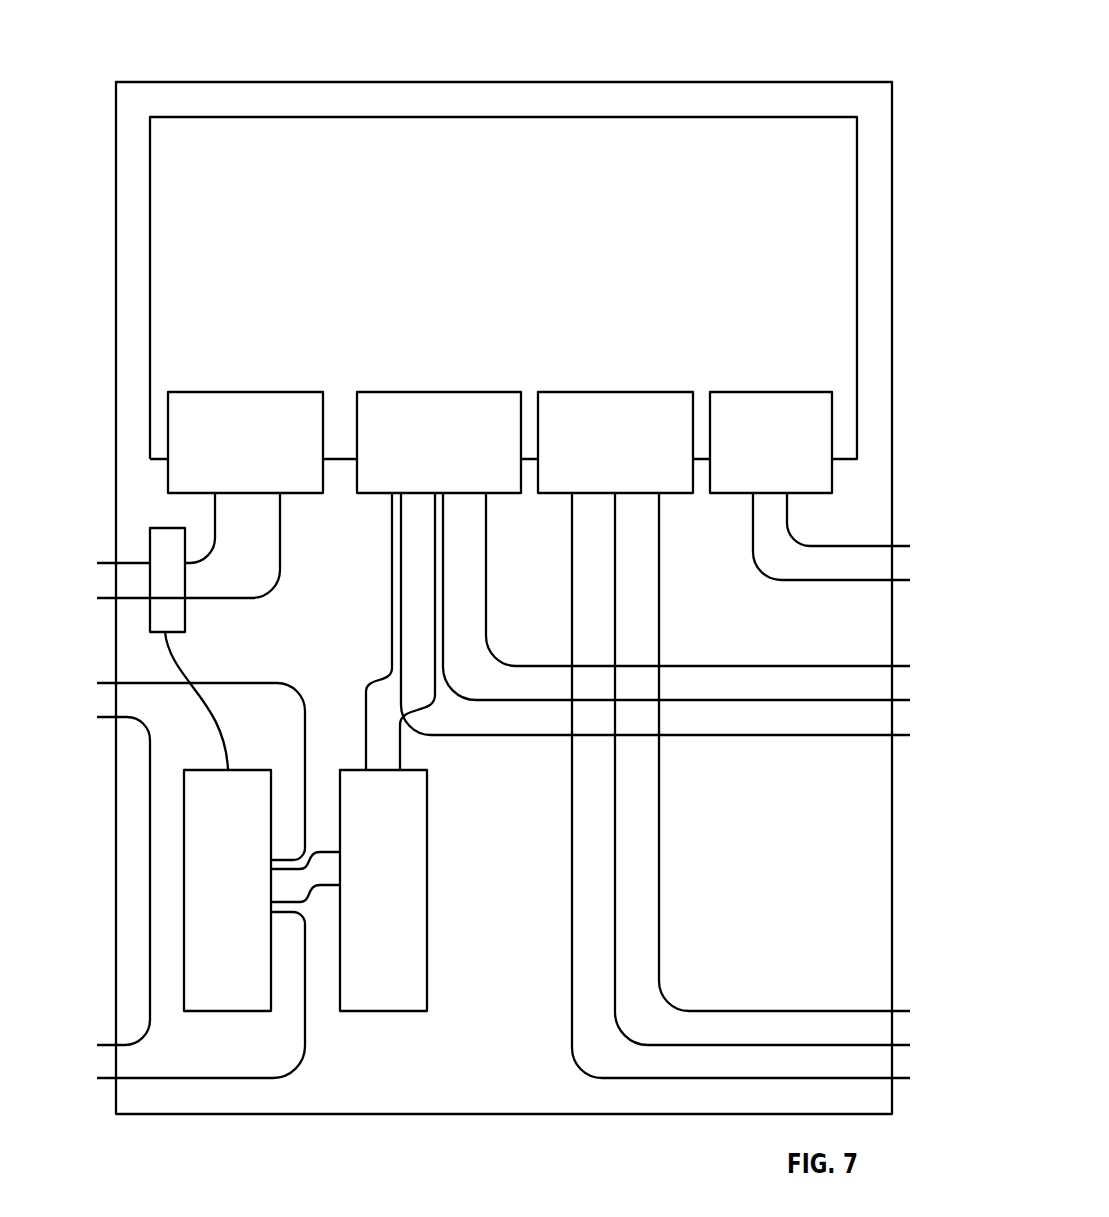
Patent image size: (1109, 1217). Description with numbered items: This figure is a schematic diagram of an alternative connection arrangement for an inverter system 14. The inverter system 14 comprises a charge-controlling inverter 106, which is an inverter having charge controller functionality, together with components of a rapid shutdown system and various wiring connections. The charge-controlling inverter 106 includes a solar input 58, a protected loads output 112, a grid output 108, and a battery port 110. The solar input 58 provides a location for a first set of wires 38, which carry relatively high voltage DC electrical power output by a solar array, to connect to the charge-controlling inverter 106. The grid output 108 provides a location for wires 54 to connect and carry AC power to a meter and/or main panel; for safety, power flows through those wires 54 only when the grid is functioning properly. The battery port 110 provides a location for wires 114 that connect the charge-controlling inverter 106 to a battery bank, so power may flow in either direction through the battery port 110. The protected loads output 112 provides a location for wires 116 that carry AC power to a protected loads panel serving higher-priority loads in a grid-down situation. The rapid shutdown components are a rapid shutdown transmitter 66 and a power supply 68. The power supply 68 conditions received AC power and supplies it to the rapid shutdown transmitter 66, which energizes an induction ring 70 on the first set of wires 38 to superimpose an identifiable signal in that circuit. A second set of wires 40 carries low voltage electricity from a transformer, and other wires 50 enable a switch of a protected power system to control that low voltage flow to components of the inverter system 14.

The inverter system 14 is at (683, 64).
The charge-controlling inverter 106 is at (484, 313).
The solar input 58 is at (290, 400).
The protected loads output 112 is at (503, 402).
The grid output 108 is at (658, 402).
The battery port 110 is at (767, 400).
The induction ring 70 is at (159, 538).
The first set of wires 38 is at (97, 607).
The second set of wires 40 is at (97, 727).
The wires 50 is at (97, 1088).
The rapid shutdown transmitter 66 is at (214, 914).
The power supply 68 is at (369, 929).
The wires 114 is at (910, 588).
The wires 116 is at (910, 745).
The wires 54 is at (910, 1087).